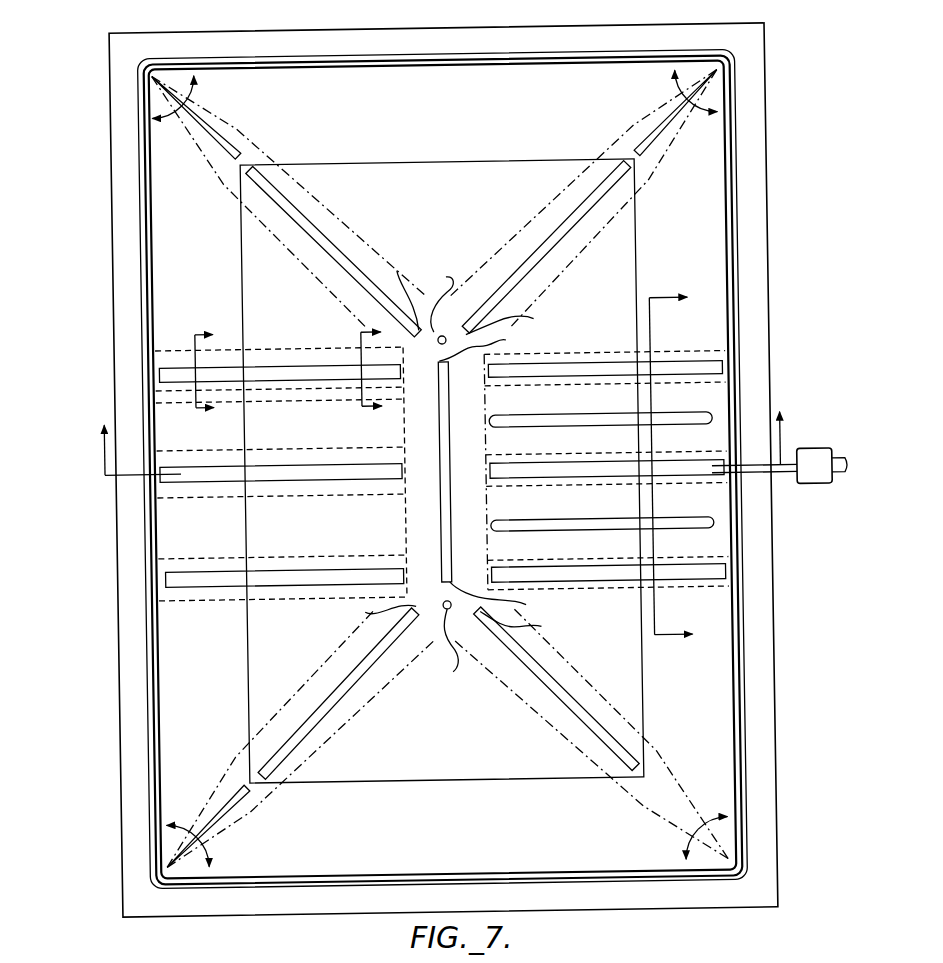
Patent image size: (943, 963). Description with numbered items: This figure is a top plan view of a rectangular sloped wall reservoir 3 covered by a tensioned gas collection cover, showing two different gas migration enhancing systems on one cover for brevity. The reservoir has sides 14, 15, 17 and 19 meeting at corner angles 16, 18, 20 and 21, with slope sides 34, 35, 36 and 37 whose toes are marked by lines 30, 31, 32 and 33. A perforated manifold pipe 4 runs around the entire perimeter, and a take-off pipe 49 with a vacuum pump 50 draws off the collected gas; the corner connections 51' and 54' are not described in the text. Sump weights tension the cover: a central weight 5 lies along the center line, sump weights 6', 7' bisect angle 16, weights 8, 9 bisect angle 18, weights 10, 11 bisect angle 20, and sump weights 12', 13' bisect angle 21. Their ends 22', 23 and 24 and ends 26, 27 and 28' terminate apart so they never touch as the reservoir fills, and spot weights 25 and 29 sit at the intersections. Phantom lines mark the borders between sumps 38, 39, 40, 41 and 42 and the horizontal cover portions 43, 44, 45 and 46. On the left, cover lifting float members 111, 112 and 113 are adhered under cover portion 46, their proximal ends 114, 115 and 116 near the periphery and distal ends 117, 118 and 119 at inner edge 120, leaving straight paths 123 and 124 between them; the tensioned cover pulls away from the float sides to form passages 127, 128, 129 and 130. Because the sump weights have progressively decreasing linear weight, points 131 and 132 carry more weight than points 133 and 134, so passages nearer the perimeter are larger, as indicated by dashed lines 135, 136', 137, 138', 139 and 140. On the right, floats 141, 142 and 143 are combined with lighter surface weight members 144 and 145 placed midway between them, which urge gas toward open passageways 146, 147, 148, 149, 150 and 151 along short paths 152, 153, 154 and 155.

The open reservoir 3 is at (597, 59).
The manifold pipe 4 is at (745, 578).
The sand filled tube weight 5 is at (451, 513).
The sump weight 6' is at (290, 186).
The sump weight 7' is at (334, 252).
The sand filled tube weight 8 is at (679, 121).
The sand filled tube weight 9 is at (581, 215).
The sand filled tube weight 10 is at (661, 803).
The sand filled tube weight 11 is at (540, 669).
The sump weight 12' is at (264, 820).
The sump weight 13' is at (339, 694).
The reservoir side 14 is at (279, 55).
The reservoir side 15 is at (284, 875).
The angle 16 is at (177, 114).
The reservoir side 17 is at (146, 700).
The angle 18 is at (691, 79).
The reservoir side 19 is at (739, 217).
The angle 20 is at (689, 852).
The angle 21 is at (199, 858).
The end of weight 22' is at (417, 284).
The end of weight 23 is at (512, 320).
The end of weight 24 is at (486, 344).
The spot weight 25 is at (437, 302).
The end of weight 26 is at (501, 597).
The end of weight 27 is at (524, 623).
The end of weight 28' is at (371, 606).
The spot weight 29 is at (438, 641).
The toe line 30 is at (470, 162).
The toe line 31 is at (640, 235).
The toe line 32 is at (461, 781).
The toe line 33 is at (245, 237).
The slope side 34 is at (477, 94).
The slope side 35 is at (718, 666).
The slope side 36 is at (374, 852).
The slope side 37 is at (186, 258).
The sump 38 is at (352, 224).
The sump 39 is at (548, 213).
The sump 40 is at (467, 543).
The sump 41 is at (577, 674).
The sump 42 is at (357, 700).
The horizontal cover portion 43 is at (450, 192).
The horizontal cover portion 44 is at (619, 290).
The horizontal cover portion 45 is at (471, 762).
The horizontal cover portion 46 is at (285, 680).
The take-off pipe 49 is at (785, 478).
The vacuum pump 50 is at (818, 454).
The corner tip 51' is at (97, 62).
The corner tip 54' is at (111, 864).
The cover lifting float member 111 is at (268, 583).
The cover lifting float member 112 is at (278, 478).
The cover lifting float member 113 is at (277, 364).
The proximal end 114 is at (188, 569).
The proximal end 115 is at (181, 463).
The proximal end 116 is at (187, 331).
The distal end 117 is at (416, 580).
The distal end 118 is at (418, 467).
The distal end 119 is at (403, 373).
The inner edge 120 is at (403, 520).
The straight path 123 is at (379, 519).
The straight path 124 is at (382, 449).
The passage 127 is at (187, 346).
The passage 128 is at (184, 399).
The passage 129 is at (344, 355).
The passage 130 is at (338, 387).
The point on sump weight 131 is at (197, 109).
The point on sump weight 132 is at (195, 829).
The point on sump weight 133 is at (364, 281).
The point on sump weight 134 is at (364, 661).
The dashed line 135 is at (334, 346).
The dashed line 136' is at (295, 407).
The dashed line 137 is at (324, 452).
The dashed line 138' is at (293, 508).
The dashed line 139 is at (323, 555).
The dashed line 140 is at (324, 596).
The cover supporting float member 141 is at (589, 568).
The cover supporting float member 142 is at (581, 464).
The cover supporting float member 143 is at (577, 365).
The surface weight member 144 is at (580, 521).
The surface weight member 145 is at (581, 417).
The open passageway 146 is at (707, 356).
The open passageway 147 is at (703, 387).
The open passageway 148 is at (703, 456).
The open passageway 149 is at (700, 487).
The open passageway 150 is at (702, 562).
The open passageway 151 is at (696, 591).
The short path 152 is at (536, 409).
The short path 153 is at (536, 444).
The path 154 is at (535, 516).
The short path 155 is at (586, 554).